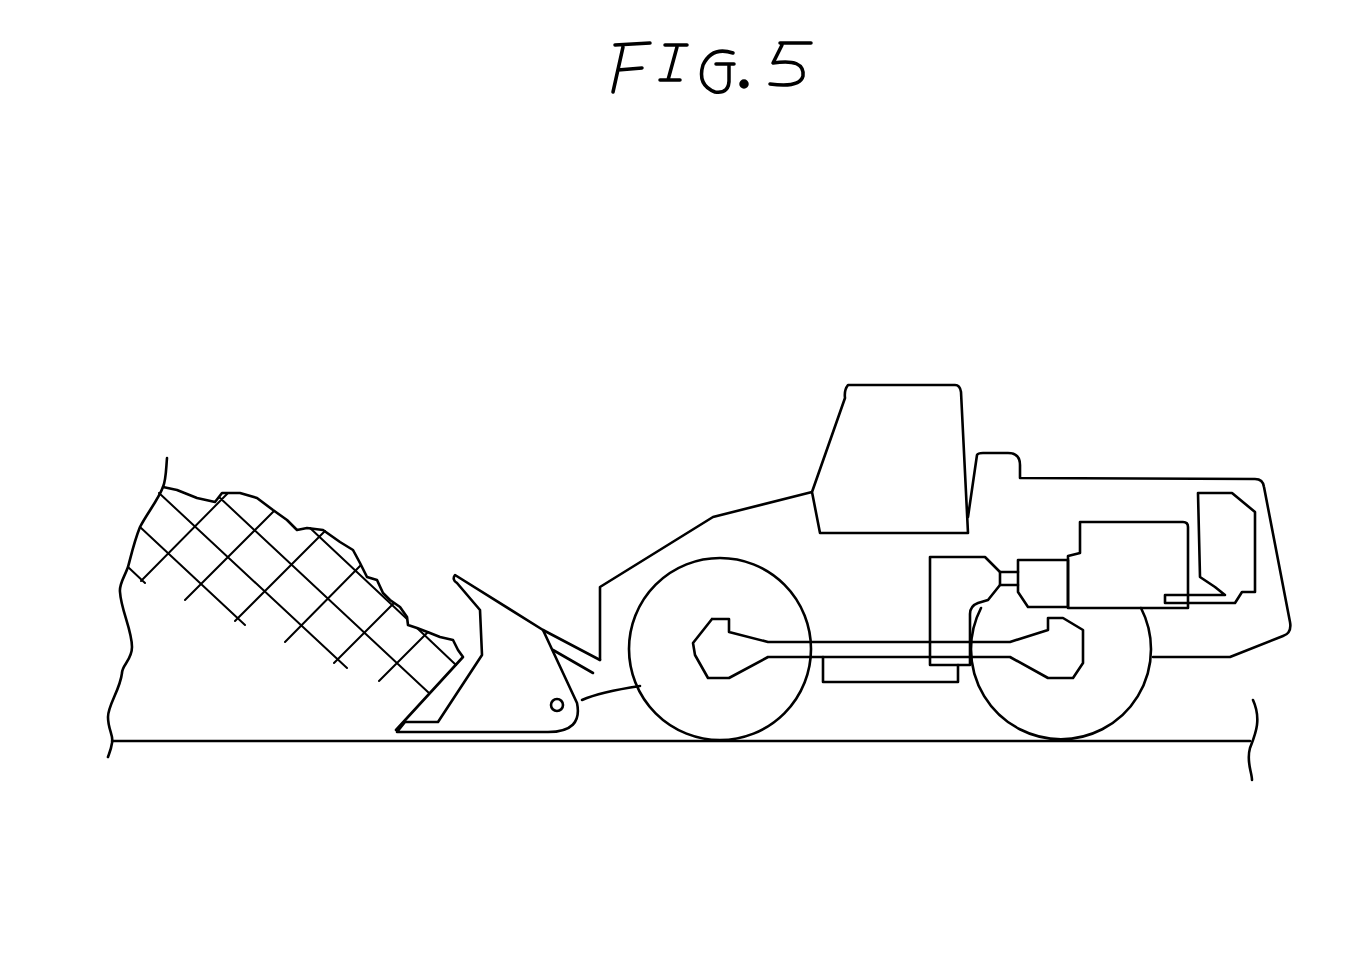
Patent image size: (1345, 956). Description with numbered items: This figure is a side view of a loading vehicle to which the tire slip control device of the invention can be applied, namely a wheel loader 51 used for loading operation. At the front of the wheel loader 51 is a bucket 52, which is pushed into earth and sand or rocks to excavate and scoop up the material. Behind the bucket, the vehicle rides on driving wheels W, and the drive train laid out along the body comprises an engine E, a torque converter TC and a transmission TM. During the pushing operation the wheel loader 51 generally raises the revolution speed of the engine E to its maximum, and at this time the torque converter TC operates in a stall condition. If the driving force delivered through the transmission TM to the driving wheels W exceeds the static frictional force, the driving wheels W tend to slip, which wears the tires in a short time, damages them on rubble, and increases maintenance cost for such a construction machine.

The wheel loader 51 is at (692, 305).
The bucket 52 is at (490, 712).
The driving wheels W is at (713, 712).
The transmission TM is at (950, 645).
The torque converter TC is at (1040, 573).
The engine E is at (1130, 537).